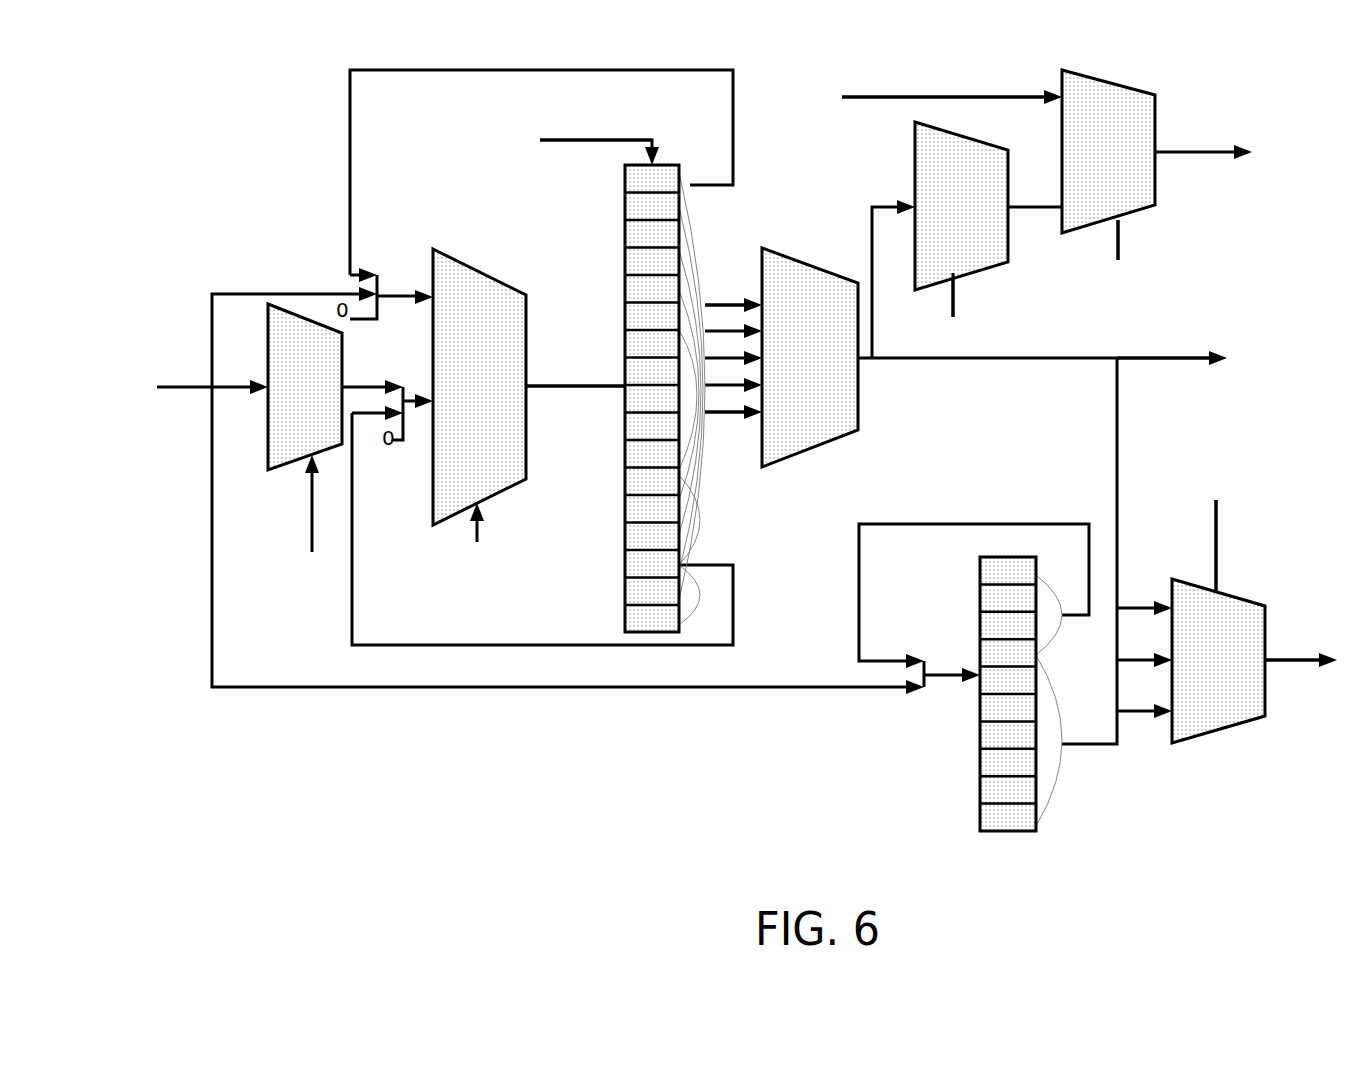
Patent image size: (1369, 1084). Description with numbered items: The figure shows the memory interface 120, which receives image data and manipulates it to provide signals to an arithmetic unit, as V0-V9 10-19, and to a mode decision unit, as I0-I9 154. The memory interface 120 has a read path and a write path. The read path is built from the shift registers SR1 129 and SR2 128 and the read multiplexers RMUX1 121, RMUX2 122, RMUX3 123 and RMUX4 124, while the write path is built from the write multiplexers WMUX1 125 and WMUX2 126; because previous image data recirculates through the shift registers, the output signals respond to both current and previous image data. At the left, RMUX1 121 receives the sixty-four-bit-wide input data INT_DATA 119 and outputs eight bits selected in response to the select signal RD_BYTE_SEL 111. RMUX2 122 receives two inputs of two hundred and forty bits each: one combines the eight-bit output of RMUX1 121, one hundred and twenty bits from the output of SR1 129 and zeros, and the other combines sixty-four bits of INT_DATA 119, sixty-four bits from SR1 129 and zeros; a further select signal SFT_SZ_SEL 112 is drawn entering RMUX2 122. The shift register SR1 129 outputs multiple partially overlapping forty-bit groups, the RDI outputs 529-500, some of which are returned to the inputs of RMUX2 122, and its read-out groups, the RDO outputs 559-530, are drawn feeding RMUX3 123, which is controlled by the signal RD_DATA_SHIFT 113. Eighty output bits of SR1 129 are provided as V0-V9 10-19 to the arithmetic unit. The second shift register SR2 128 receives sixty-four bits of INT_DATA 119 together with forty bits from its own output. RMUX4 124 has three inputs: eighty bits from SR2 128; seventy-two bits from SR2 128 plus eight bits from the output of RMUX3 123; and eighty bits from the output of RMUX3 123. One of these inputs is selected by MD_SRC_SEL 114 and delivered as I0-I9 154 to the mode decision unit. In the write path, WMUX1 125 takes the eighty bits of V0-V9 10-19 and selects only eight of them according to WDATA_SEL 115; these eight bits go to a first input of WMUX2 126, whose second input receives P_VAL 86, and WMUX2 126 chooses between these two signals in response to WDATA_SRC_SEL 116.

The INT_DATA input data 119 is at (161, 374).
The read multiplexer RMUX1 121 is at (305, 387).
The read multiplexer RMUX2 122 is at (479, 387).
The RD_BYTE_SEL signal 111 is at (304, 525).
The SFT_SZ_SEL shift size select signal 112 is at (477, 540).
The RD_DATA_SHIFT signal 113 is at (516, 151).
The RDI_29 - RD1_0 shift register inputs 529-500 is at (583, 330).
The shift register SR1 129 is at (608, 539).
The RDO_29 - RDO_0 shift register outputs 559-530 is at (723, 265).
The read multiplexer RMUX3 123 is at (810, 357).
The write multiplexer WMUX1 125 is at (961, 206).
The write multiplexer WMUX2 126 is at (1108, 151).
The P_VAL signal 86 is at (896, 96).
The WDATA_SRC_SEL signal 116 is at (1136, 255).
The WDATA_SEL signal 115 is at (962, 309).
The V0-V9 signals 10-19 is at (1172, 339).
The MD_SRC_SEL signal 114 is at (1217, 533).
The I0-I9 signals 154 is at (1306, 611).
The read multiplexer RMUX4 124 is at (1218, 661).
The shift register SR2 128 is at (940, 812).
The memory interface 120 is at (574, 880).